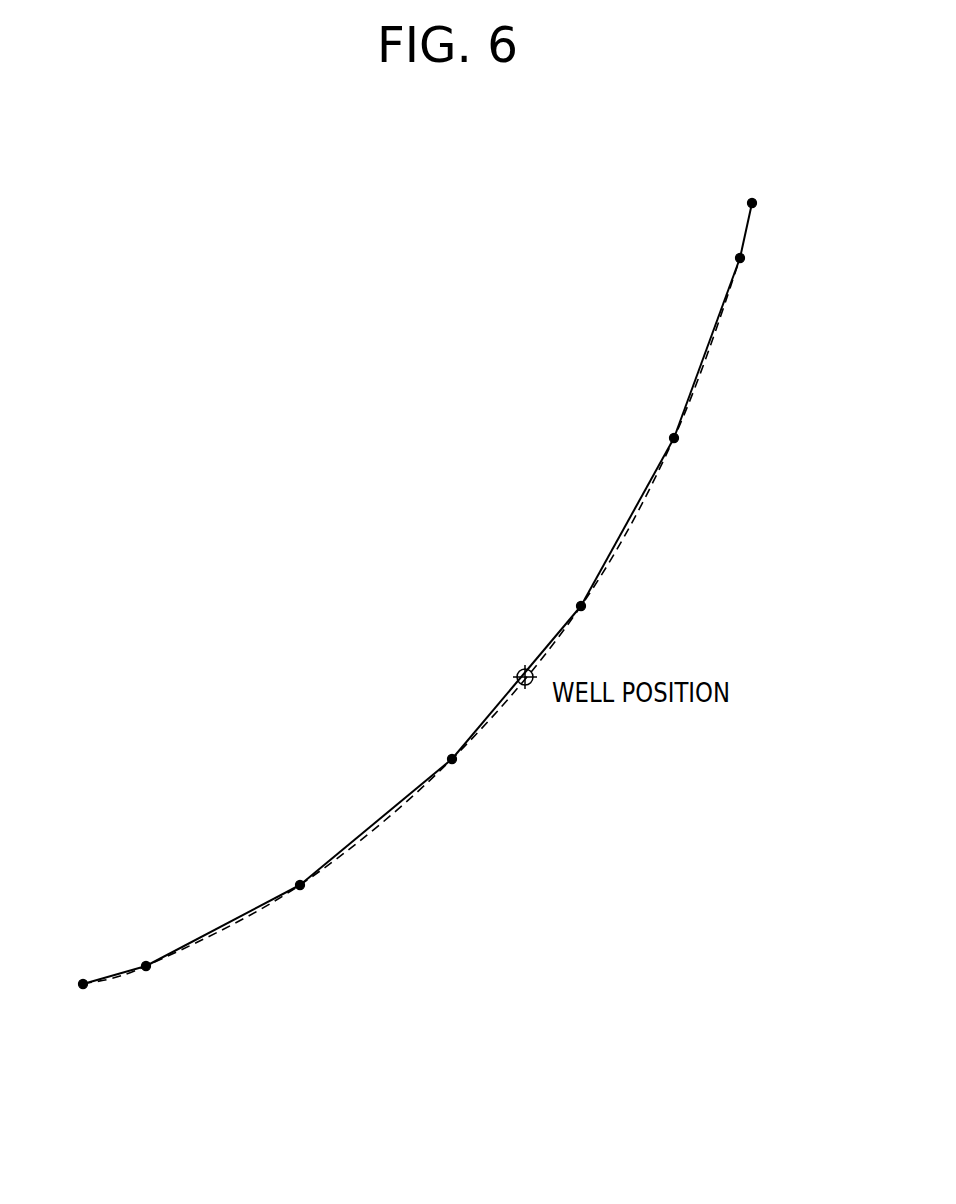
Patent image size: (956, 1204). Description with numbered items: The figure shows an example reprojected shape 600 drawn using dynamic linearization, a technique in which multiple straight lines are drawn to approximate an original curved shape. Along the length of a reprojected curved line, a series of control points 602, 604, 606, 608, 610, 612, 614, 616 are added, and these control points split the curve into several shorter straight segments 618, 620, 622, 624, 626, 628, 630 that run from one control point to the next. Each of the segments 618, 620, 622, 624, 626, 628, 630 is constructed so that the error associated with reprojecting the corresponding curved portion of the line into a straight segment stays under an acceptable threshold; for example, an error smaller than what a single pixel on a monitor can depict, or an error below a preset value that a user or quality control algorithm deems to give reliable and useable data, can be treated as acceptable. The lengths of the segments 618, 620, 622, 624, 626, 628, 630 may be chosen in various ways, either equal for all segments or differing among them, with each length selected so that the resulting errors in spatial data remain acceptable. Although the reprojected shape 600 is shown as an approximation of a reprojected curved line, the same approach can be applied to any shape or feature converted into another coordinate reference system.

The reprojected shape 600 is at (185, 295).
The control point 602 is at (88, 988).
The control point 604 is at (150, 969).
The control point 606 is at (303, 890).
The control point 608 is at (456, 763).
The control point 610 is at (586, 608).
The control point 612 is at (678, 442).
The control point 614 is at (744, 262).
The control point 616 is at (755, 208).
The straight segment 618 is at (122, 974).
The straight segment 620 is at (226, 922).
The straight segment 622 is at (382, 816).
The straight segment 624 is at (488, 716).
The straight segment 626 is at (616, 543).
The straight segment 628 is at (706, 352).
The straight segment 630 is at (746, 233).